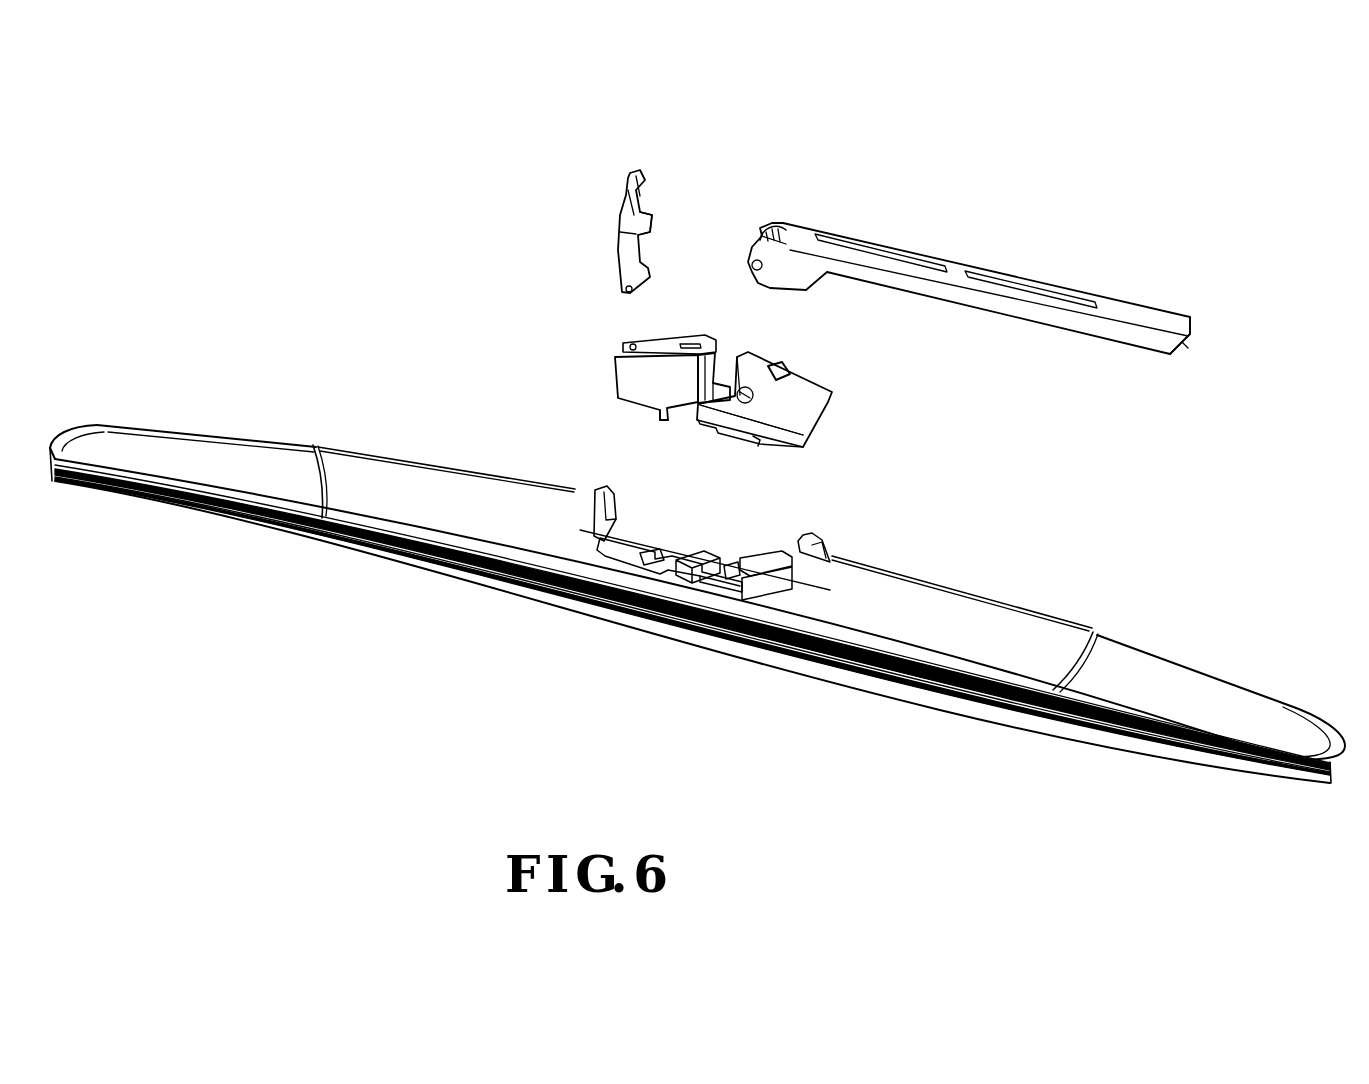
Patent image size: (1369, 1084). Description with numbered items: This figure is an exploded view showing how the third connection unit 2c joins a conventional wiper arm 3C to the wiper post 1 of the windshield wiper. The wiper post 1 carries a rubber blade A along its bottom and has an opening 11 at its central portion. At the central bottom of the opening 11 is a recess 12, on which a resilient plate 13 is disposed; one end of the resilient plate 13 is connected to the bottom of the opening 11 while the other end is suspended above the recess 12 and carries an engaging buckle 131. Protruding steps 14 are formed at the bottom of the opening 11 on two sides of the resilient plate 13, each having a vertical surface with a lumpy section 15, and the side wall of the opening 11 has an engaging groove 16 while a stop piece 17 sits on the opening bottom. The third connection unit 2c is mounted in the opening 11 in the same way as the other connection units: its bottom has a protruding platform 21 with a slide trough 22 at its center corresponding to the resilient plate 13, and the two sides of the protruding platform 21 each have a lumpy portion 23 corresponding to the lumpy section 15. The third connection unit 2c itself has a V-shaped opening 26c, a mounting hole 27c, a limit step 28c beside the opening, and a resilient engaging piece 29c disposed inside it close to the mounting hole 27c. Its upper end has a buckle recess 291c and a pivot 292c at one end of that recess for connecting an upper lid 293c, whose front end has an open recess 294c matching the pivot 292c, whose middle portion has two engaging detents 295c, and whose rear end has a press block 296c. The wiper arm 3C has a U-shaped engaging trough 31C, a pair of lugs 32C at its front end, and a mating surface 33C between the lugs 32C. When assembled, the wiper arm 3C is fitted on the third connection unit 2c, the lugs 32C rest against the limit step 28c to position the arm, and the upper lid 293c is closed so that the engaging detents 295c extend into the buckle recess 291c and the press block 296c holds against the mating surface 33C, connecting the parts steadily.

The wiper post 1 is at (1138, 668).
The rubber blade A is at (1130, 737).
The opening 11 is at (801, 522).
The recess 12 is at (690, 594).
The resilient plate 13 is at (716, 560).
The engaging buckle 131 is at (655, 585).
The protruding steps 14 is at (762, 600).
The lumpy section 15 is at (607, 560).
The engaging groove 16 is at (600, 530).
The stop piece 17 is at (630, 525).
The protruding platform 21 is at (738, 440).
The slide trough 22 is at (712, 436).
The lumpy portion 23 is at (662, 414).
The third connection unit 2c is at (808, 433).
The V-shaped opening 26c is at (720, 354).
The mounting hole 27c is at (806, 410).
The limit step 28c is at (672, 428).
The resilient engaging piece 29c is at (780, 370).
The buckle recess 291c is at (690, 342).
The pivot 292c is at (622, 356).
The upper lid 293c is at (612, 210).
The open recess 294c is at (625, 291).
The engaging detents 295c is at (650, 213).
The press block 296c is at (632, 172).
The wiper arm 3C is at (1138, 316).
The U-shaped engaging trough 31C is at (1190, 342).
The lugs 32C is at (775, 238).
The mating surface 33C is at (760, 234).